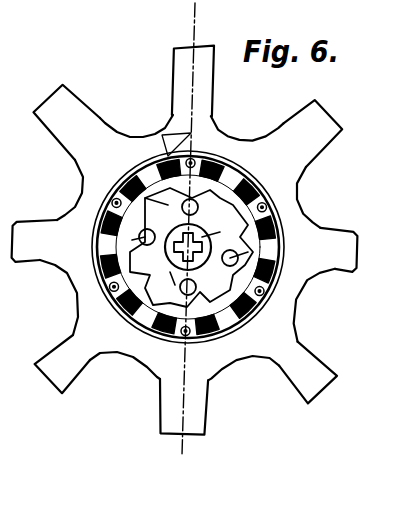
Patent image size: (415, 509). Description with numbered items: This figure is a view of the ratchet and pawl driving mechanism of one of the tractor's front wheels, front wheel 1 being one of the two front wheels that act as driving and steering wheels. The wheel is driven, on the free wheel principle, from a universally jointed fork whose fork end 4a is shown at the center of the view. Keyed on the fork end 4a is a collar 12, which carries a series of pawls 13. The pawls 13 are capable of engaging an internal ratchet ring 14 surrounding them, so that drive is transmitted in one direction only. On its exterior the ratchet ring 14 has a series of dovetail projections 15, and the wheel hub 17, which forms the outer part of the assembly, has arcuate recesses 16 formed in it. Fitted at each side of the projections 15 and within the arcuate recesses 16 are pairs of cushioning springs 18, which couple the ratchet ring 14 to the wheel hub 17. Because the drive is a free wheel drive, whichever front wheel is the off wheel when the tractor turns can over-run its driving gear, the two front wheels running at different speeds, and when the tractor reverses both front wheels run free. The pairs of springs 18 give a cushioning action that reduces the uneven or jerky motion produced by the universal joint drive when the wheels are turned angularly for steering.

The front wheel 1 is at (177, 240).
The fork end 4a is at (246, 203).
The collar 12 is at (139, 339).
The pawls 13 is at (214, 157).
The internal ratchet ring 14 is at (252, 170).
The dovetail projections 15 is at (140, 167).
The arcuate recesses 16 is at (194, 131).
The wheel hub 17 is at (325, 252).
The cushioning springs 18 is at (266, 206).